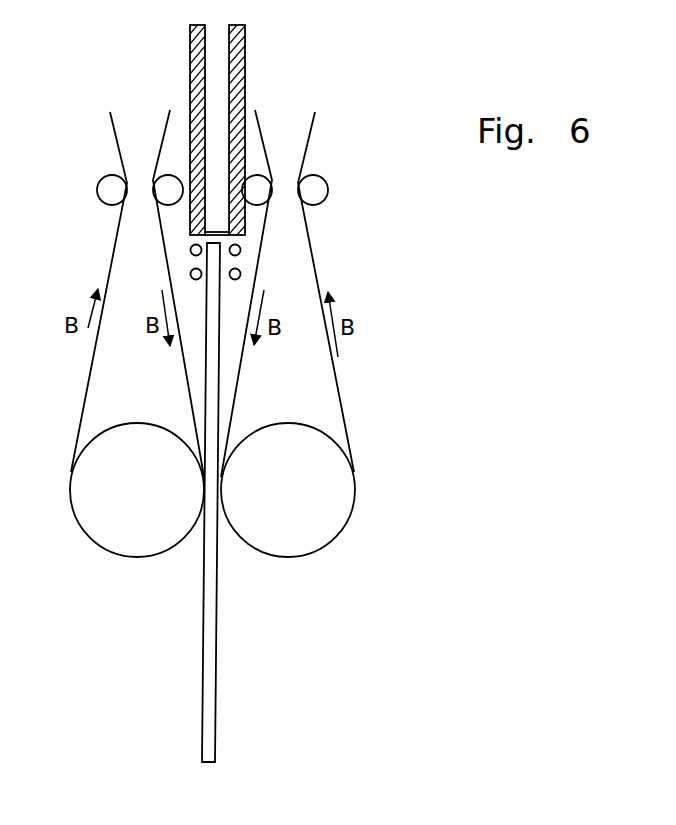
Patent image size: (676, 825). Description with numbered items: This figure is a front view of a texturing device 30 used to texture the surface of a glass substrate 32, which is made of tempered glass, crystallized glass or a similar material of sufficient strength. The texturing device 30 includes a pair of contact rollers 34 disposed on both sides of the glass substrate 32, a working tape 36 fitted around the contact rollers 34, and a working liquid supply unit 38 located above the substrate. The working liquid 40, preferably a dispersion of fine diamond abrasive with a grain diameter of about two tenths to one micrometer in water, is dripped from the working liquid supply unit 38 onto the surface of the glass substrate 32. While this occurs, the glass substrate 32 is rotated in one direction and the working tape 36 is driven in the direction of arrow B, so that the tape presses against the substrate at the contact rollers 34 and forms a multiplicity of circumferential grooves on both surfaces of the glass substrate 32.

The texturing device 30 is at (384, 258).
The glass substrate 32 is at (210, 680).
The contact rollers 34 is at (80, 497).
The working tape 36 is at (88, 386).
The working liquid supply unit 38 is at (244, 52).
The working liquid 40 is at (190, 274).